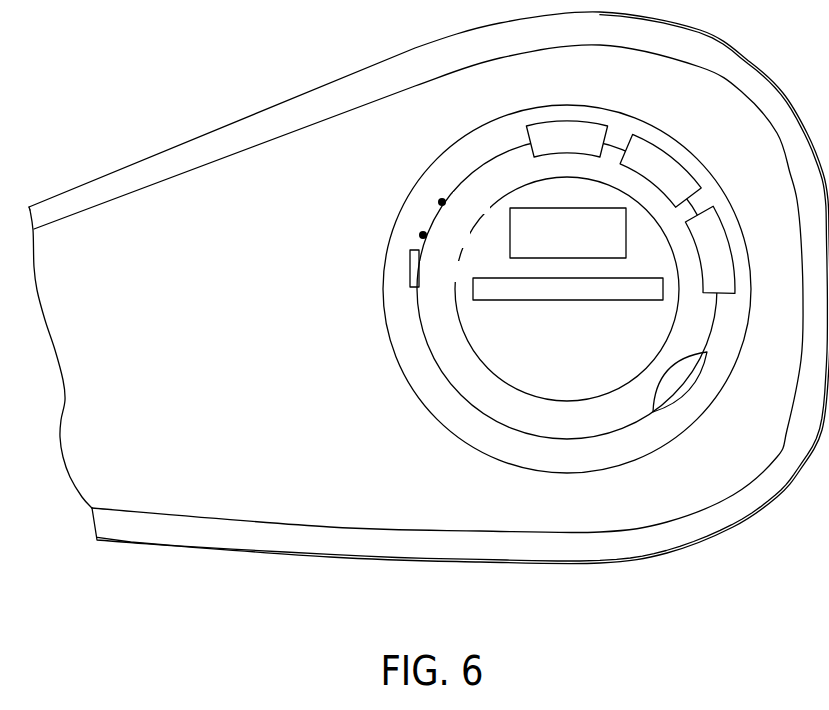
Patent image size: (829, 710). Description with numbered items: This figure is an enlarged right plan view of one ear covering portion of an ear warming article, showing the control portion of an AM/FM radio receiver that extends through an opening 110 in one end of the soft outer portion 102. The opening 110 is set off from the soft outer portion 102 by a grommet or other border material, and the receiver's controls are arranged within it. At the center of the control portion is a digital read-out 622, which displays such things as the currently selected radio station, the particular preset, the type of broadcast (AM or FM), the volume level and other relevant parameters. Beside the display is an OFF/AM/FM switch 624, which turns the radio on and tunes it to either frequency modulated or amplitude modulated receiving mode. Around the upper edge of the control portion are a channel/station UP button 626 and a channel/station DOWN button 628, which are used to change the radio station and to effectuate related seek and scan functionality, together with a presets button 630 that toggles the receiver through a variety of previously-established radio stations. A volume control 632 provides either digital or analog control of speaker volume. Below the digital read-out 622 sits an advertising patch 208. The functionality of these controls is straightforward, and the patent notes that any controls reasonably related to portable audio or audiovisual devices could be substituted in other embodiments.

The soft outer portion 102 is at (168, 196).
The opening 110 is at (405, 345).
The advertising patch 208 is at (543, 293).
The digital read-out 622 is at (520, 218).
The OFF/AM/FM switch 624 is at (420, 233).
The channel/station UP button 626 is at (538, 130).
The channel/station DOWN button 628 is at (662, 158).
The presets button 630 is at (720, 227).
The volume control 632 is at (667, 400).